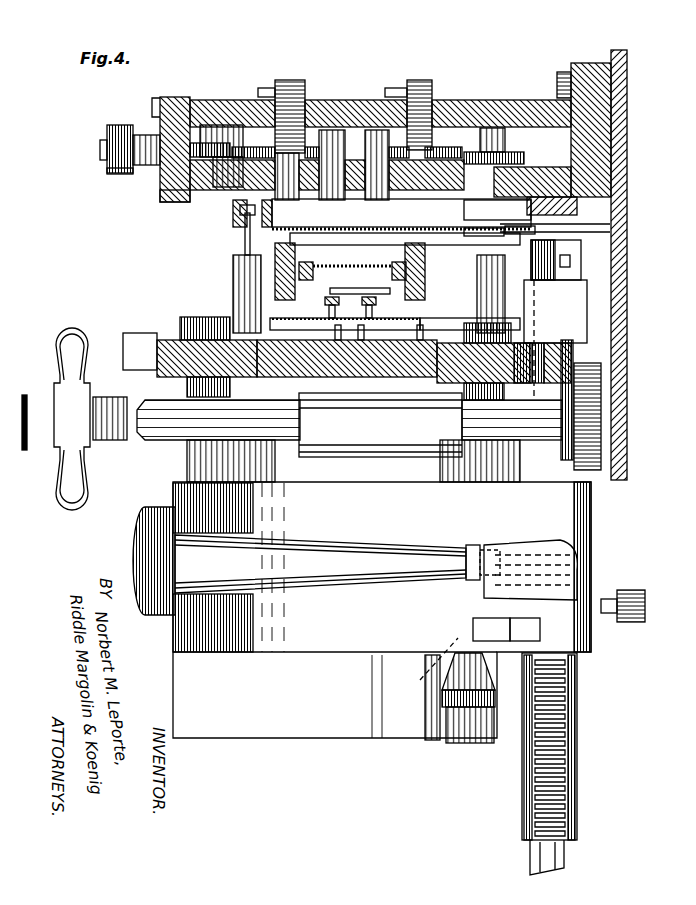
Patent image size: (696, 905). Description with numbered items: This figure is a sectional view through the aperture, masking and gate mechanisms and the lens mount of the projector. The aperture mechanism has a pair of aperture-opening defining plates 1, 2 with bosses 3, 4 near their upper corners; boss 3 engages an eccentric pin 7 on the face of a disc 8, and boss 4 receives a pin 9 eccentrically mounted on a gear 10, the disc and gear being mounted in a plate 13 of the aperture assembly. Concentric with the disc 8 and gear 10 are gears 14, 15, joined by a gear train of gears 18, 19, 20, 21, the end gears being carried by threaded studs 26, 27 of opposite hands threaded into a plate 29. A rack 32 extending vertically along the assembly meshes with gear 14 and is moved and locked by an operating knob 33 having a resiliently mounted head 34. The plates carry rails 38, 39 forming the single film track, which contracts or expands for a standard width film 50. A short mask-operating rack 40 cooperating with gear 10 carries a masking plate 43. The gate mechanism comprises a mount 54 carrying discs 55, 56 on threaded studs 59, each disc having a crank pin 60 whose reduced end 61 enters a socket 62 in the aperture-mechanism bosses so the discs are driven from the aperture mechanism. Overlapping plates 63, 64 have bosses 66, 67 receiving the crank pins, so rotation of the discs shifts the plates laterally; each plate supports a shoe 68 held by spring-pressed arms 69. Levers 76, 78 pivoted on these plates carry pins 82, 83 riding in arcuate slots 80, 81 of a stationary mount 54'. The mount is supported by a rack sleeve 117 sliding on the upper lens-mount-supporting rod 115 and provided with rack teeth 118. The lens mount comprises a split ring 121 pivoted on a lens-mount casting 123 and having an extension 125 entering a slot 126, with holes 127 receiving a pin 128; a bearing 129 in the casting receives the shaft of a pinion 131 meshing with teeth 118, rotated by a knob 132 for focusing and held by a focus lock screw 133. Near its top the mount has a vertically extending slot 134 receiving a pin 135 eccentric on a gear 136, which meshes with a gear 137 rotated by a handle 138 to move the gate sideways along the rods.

The aperture-opening defining plate 1 is at (290, 236).
The aperture-opening defining plate 2 is at (475, 236).
The boss 3 is at (262, 205).
The boss 4 is at (530, 234).
The eccentric pin 7 is at (278, 208).
The disc 8 is at (165, 197).
The pin 9 is at (470, 222).
The gear 10 is at (611, 226).
The plate 13 is at (570, 170).
The gear 14 is at (181, 104).
The gear 15 is at (510, 152).
The gear 18 is at (228, 124).
The gear 19 is at (340, 118).
The gear 20 is at (380, 130).
The gear 21 is at (458, 128).
The threaded stud 26 is at (284, 80).
The threaded stud 27 is at (425, 80).
The plate 29 is at (333, 100).
The rack 32 is at (160, 150).
The operating knob 33 is at (105, 148).
The resiliently mounted head 34 is at (110, 178).
The rail 38 is at (300, 235).
The rail 39 is at (392, 232).
The mask-operating rack 40 is at (577, 208).
The masking plate 43 is at (581, 258).
The standard width film 50 is at (350, 246).
The mount 54 is at (137, 338).
The stationary mount 54' is at (218, 420).
The disc 55 is at (185, 317).
The disc 56 is at (532, 318).
The threaded stud 59 is at (176, 366).
The crank pin 60 is at (234, 268).
The reduced end of crank pin 61 is at (245, 243).
The socket 62 is at (250, 218).
The plate 63 is at (355, 260).
The plate 64 is at (392, 266).
The boss 66 is at (268, 313).
The boss 67 is at (430, 309).
The shoe 68 is at (360, 284).
The spring-pressed arm 69 is at (283, 300).
The lever 76 is at (300, 352).
The lever 78 is at (356, 335).
The arcuate slot 80 is at (265, 345).
The arcuate slot 81 is at (418, 340).
The pin 82 is at (338, 340).
The pin 83 is at (361, 340).
The lens-mount-supporting rod 115 is at (566, 862).
The rack sleeve 117 is at (576, 718).
The rack teeth 118 is at (576, 765).
The lens mount ring 121 is at (282, 640).
The lens-mount casting 123 is at (590, 560).
The extension 125 is at (497, 632).
The slot 126 is at (540, 630).
The holes 127 is at (430, 672).
The pin 128 is at (460, 705).
The bearing 129 is at (440, 553).
The pinion 131 is at (570, 540).
The knob 132 is at (135, 540).
The focus lock screw 133 is at (645, 600).
The vertically extending slot 134 is at (562, 320).
The pin 135 is at (554, 343).
The gear 136 is at (580, 352).
The gear 137 is at (595, 372).
The handle 138 is at (62, 335).